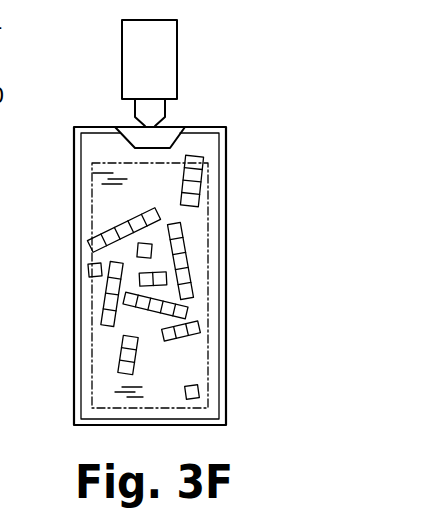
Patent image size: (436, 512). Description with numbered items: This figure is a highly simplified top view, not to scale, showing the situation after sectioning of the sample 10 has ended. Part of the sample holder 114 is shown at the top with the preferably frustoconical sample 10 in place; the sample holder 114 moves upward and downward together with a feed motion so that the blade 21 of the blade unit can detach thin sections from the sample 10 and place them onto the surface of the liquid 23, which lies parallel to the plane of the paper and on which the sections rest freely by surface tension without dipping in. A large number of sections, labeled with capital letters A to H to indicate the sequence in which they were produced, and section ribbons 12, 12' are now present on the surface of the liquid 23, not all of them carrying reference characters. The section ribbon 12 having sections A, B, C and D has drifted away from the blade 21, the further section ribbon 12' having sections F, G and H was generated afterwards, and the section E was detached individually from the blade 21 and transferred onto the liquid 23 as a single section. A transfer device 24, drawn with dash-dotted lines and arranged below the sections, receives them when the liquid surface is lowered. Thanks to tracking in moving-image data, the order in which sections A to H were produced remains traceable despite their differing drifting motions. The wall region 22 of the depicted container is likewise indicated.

The sample holder 114 is at (167, 59).
The sample 10 is at (165, 114).
The blade 21 is at (130, 132).
The container wall 22 is at (0, 208).
The liquid 23 is at (0, 168).
The transfer device 24 is at (90, 297).
The section ribbon 12 is at (236, 355).
The further section ribbon 12' is at (198, 240).
The section A is at (123, 366).
The section B is at (125, 350).
The section C is at (127, 336).
The section D is at (88, 268).
The section E is at (196, 396).
The section F is at (192, 297).
The section G is at (193, 281).
The section H is at (192, 265).